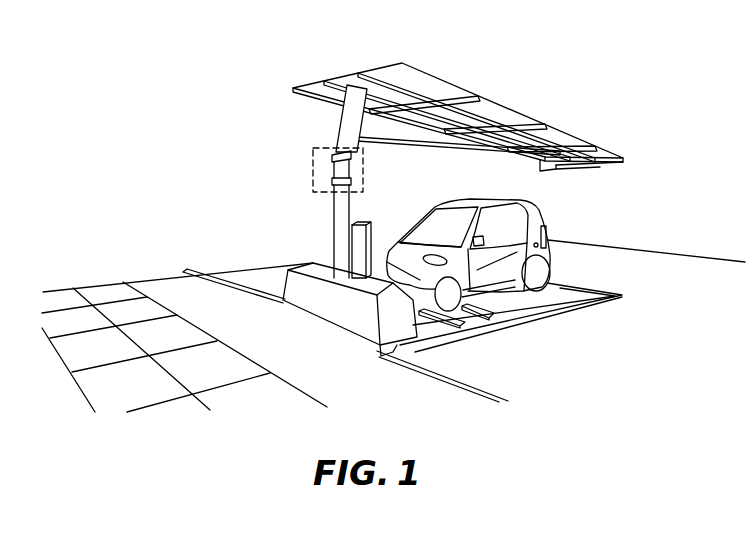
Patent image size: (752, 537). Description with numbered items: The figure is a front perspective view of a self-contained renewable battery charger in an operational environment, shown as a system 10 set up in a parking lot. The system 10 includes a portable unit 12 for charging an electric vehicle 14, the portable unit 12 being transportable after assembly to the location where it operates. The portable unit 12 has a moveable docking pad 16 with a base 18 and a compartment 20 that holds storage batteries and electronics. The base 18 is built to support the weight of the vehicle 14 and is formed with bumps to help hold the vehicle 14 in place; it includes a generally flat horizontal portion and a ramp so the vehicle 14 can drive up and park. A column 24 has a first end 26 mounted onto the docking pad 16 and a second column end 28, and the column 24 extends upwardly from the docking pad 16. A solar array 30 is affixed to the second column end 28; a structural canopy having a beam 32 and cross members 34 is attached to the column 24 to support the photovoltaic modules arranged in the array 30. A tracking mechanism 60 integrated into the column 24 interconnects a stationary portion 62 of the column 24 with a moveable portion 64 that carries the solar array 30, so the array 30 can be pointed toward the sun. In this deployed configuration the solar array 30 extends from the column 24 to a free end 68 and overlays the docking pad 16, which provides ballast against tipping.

The system 10 is at (163, 200).
The portable unit 12 is at (280, 284).
The electric vehicle 14 is at (544, 215).
The moveable docking pad 16 is at (558, 298).
The base 18 is at (537, 312).
The compartment 20 is at (490, 300).
The column 24 is at (330, 225).
The first end 26 is at (330, 266).
The second column end 28 is at (326, 92).
The solar array 30 is at (540, 113).
The beam 32 is at (543, 170).
The cross members 34 is at (502, 104).
The tracking mechanism 60 is at (313, 180).
The stationary portion 62 is at (348, 212).
The moveable portion 64 is at (335, 128).
The free end 68 is at (603, 166).